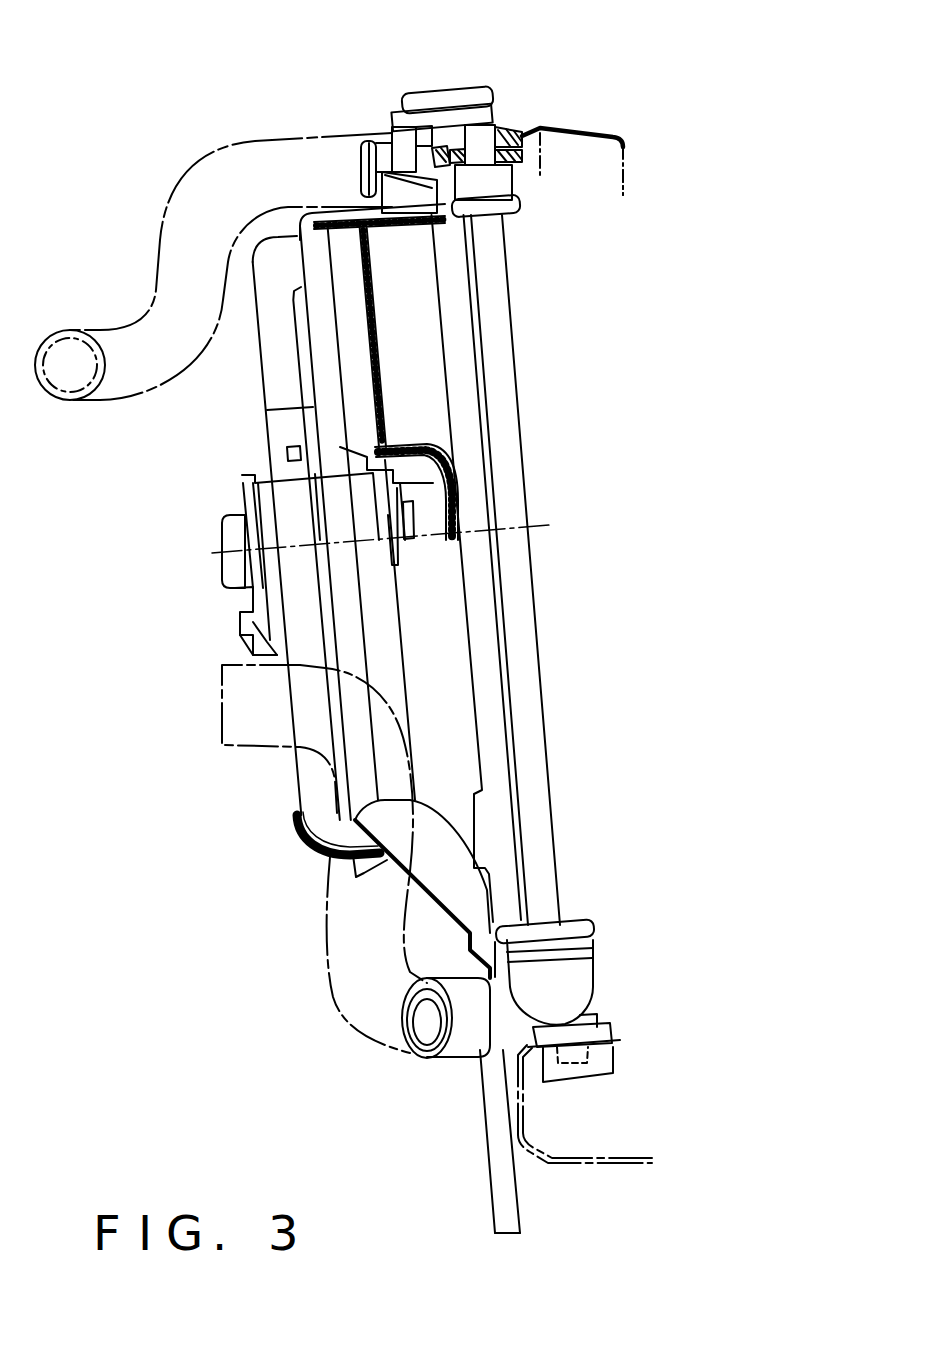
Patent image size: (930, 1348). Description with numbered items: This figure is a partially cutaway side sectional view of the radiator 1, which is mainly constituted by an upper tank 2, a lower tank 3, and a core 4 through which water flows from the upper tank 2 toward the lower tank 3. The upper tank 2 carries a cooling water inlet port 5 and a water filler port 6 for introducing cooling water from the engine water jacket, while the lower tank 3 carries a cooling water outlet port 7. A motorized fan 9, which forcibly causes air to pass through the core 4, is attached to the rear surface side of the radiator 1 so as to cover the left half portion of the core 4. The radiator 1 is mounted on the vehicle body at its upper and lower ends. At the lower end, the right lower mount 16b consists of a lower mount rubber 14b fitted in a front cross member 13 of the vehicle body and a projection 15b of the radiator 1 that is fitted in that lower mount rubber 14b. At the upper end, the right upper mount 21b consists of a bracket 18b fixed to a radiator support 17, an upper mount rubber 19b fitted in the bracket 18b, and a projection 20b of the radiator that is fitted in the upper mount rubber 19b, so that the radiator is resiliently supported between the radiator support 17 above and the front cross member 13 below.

The radiator 1 is at (558, 422).
The upper tank 2 is at (503, 185).
The lower tank 3 is at (582, 977).
The core 4 is at (535, 652).
The cooling water inlet port 5 is at (383, 145).
The water filler port 6 is at (438, 118).
The cooling water outlet port 7 is at (418, 1026).
The motorized fan 9 is at (300, 816).
The front cross member 13 is at (627, 1167).
The lower mount rubber 14b is at (610, 1077).
The projection 15b is at (622, 1047).
The lower mount 16b is at (624, 1058).
The radiator support 17 is at (627, 190).
The bracket 18b is at (579, 128).
The upper mount rubber 19b is at (513, 110).
The projection 20b is at (475, 126).
The upper mount 21b is at (513, 112).